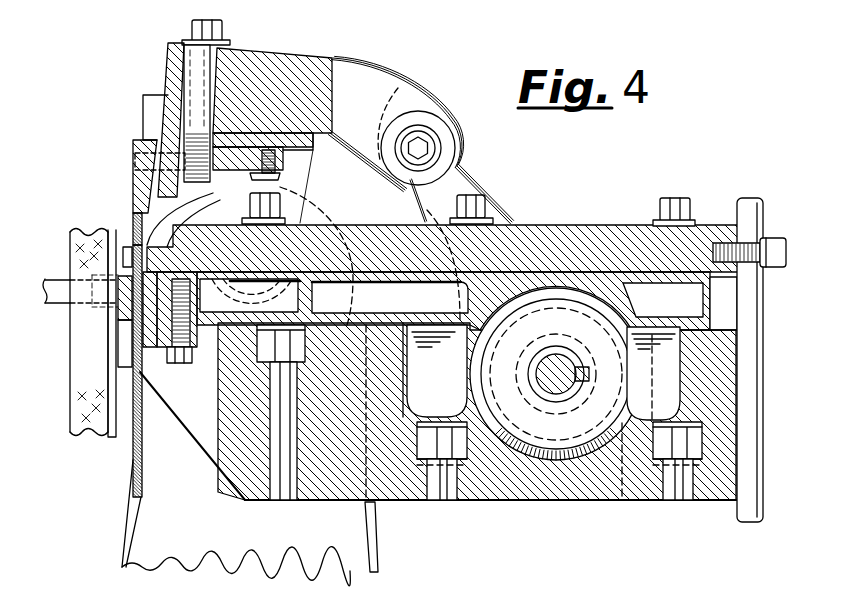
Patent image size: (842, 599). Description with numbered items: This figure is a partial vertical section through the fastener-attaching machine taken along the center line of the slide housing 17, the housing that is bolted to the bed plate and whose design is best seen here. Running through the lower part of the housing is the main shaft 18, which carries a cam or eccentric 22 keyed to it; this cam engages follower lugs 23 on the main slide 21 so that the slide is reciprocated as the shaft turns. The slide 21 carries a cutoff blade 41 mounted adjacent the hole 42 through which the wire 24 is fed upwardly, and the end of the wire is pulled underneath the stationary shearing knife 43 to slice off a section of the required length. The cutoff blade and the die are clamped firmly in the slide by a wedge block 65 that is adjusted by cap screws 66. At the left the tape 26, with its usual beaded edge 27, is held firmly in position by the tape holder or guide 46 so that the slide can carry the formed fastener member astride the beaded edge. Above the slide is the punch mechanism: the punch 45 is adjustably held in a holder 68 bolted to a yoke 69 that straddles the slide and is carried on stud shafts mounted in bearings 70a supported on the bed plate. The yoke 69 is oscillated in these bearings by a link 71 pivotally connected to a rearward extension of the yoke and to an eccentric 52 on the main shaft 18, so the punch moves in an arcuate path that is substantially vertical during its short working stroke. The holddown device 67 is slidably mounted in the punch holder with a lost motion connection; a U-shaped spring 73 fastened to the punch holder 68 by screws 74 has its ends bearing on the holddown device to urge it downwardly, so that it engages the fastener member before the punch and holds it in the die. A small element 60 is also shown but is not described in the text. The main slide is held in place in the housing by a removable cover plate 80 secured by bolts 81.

The slide housing 17 is at (333, 502).
The main shaft 18 is at (544, 360).
The main slide 21 is at (364, 315).
The cam or eccentric 22 is at (572, 455).
The follower lugs 23 is at (680, 382).
The wire 24 is at (143, 468).
The tape 26 is at (83, 435).
The beaded edge 27 is at (108, 440).
The cutoff blade 41 is at (148, 380).
The hole 42 is at (146, 350).
The stationary shearing knife 43 is at (165, 240).
The punch 45 is at (127, 208).
The tape holder or guide 46 is at (50, 279).
The eccentric 52 is at (623, 505).
The tab 60 is at (124, 250).
The wedge block 65 is at (152, 364).
The cap screws 66 is at (180, 364).
The holddown device 67 is at (147, 213).
The punch holder 68 is at (157, 196).
The yoke 69 is at (310, 58).
The bearings 70a is at (378, 540).
The link 71 is at (500, 214).
The U-shaped spring 73 is at (246, 180).
The screws 74 is at (268, 177).
The cover plate 80 is at (635, 223).
The bolts 81 is at (471, 196).